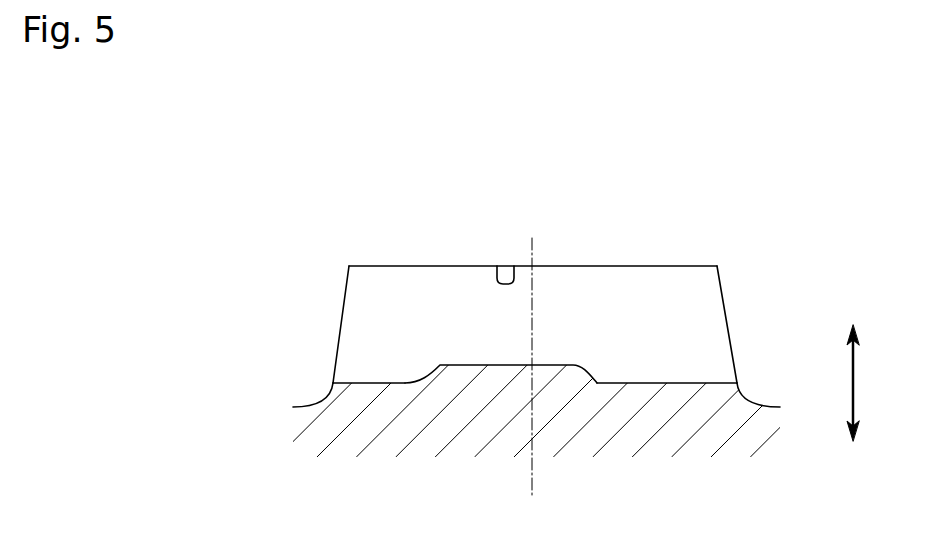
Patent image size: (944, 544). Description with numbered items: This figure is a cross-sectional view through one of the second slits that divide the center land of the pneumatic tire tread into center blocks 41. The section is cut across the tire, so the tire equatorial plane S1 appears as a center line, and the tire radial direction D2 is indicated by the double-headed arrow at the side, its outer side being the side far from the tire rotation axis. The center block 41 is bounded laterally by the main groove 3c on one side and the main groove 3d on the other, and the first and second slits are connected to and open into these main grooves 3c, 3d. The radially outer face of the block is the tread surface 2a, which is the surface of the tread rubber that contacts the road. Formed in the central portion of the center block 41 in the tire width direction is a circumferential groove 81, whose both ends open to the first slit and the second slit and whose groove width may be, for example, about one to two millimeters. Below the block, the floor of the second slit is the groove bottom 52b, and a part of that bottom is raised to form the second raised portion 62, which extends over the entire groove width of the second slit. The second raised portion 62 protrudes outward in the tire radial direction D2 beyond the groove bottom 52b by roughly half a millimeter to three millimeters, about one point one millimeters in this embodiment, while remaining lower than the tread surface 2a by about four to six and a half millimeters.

The center block 41 is at (461, 266).
The tread surface 2a is at (626, 265).
The circumferential groove 81 is at (507, 267).
The second raised portion 62 is at (472, 363).
The groove bottom 52b is at (687, 383).
The main groove 3c is at (305, 300).
The main groove 3d is at (773, 302).
The tire equatorial plane S1 is at (533, 255).
The tire radial direction D2 is at (867, 383).